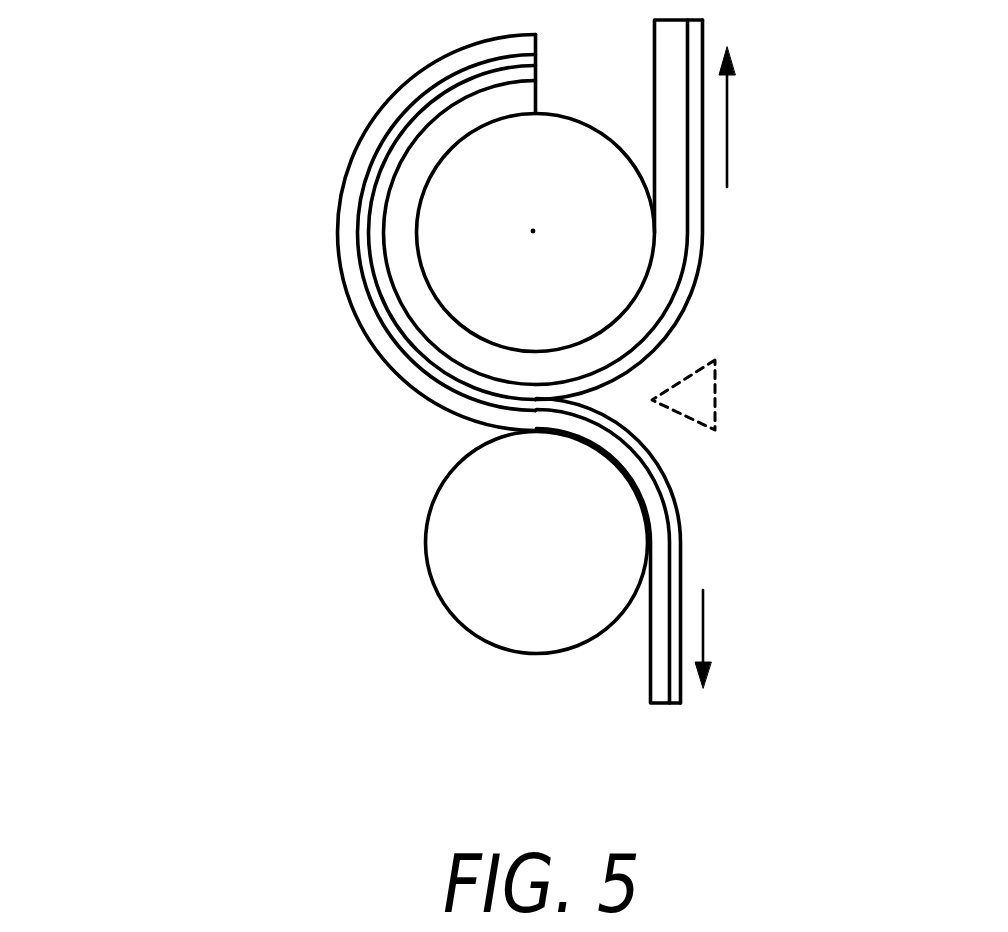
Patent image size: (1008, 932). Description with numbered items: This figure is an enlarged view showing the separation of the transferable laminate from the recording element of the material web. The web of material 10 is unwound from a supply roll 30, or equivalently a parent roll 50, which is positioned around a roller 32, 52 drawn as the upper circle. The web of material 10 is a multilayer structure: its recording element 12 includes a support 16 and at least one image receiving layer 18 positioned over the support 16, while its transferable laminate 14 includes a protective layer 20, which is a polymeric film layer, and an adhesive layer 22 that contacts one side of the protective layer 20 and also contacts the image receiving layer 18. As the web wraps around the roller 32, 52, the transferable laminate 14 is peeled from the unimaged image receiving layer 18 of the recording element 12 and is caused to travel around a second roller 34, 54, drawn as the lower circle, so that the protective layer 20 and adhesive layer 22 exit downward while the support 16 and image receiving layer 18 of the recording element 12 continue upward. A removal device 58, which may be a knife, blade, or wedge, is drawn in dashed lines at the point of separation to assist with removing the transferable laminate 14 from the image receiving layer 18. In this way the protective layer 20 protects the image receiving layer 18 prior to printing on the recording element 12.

The web of material 10 is at (473, 278).
The recording element 12 is at (807, 223).
The transferable laminate 14 is at (797, 415).
The support 16 is at (407, 267).
The image receiving layer 18 is at (390, 297).
The protective layer 20 is at (410, 368).
The adhesive layer 22 is at (390, 336).
The supply roll 30 is at (440, 278).
The parent roll 50 is at (325, 132).
The roller 32 is at (374, 233).
The roller 52 is at (497, 228).
The roller 34 is at (432, 543).
The roller 54 is at (503, 555).
The removal device 58 is at (717, 392).